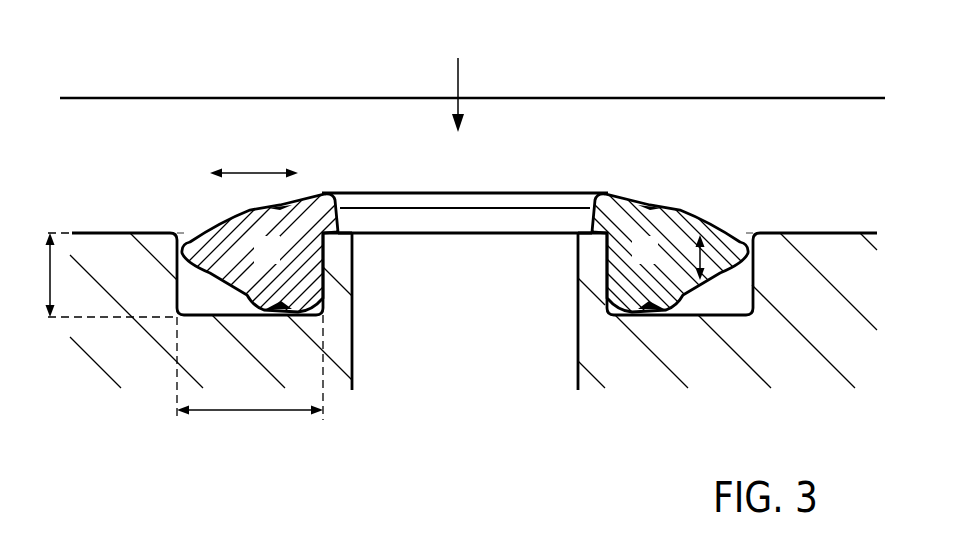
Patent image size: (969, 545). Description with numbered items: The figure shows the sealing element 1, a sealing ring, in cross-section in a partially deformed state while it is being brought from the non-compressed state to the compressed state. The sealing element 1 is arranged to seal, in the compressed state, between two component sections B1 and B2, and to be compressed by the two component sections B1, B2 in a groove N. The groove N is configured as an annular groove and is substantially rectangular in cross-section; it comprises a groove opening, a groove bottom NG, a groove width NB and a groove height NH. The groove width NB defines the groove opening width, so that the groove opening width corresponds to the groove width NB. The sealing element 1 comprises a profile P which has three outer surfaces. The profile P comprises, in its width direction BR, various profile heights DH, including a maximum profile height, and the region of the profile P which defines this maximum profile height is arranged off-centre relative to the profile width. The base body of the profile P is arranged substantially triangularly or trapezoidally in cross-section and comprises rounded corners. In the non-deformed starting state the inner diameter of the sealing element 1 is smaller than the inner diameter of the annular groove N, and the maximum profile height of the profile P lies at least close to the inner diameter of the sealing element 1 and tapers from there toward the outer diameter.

The sealing element 1 is at (336, 176).
The profile P is at (465, 235).
The component section B1 is at (153, 367).
The component section B2 is at (193, 97).
The groove N is at (195, 293).
The groove bottom NG is at (247, 318).
The groove width NB is at (250, 378).
The groove height NH is at (94, 275).
The width direction BR is at (254, 159).
The profile height DH is at (695, 258).